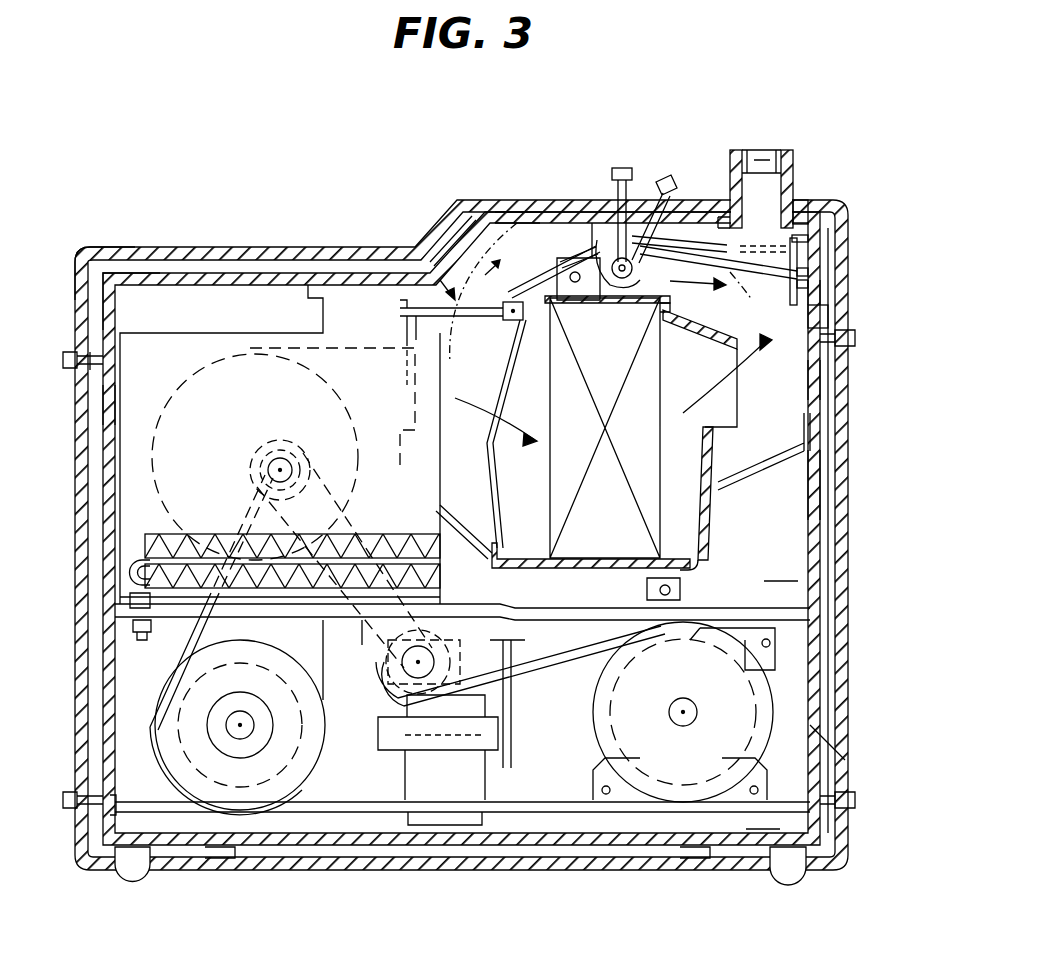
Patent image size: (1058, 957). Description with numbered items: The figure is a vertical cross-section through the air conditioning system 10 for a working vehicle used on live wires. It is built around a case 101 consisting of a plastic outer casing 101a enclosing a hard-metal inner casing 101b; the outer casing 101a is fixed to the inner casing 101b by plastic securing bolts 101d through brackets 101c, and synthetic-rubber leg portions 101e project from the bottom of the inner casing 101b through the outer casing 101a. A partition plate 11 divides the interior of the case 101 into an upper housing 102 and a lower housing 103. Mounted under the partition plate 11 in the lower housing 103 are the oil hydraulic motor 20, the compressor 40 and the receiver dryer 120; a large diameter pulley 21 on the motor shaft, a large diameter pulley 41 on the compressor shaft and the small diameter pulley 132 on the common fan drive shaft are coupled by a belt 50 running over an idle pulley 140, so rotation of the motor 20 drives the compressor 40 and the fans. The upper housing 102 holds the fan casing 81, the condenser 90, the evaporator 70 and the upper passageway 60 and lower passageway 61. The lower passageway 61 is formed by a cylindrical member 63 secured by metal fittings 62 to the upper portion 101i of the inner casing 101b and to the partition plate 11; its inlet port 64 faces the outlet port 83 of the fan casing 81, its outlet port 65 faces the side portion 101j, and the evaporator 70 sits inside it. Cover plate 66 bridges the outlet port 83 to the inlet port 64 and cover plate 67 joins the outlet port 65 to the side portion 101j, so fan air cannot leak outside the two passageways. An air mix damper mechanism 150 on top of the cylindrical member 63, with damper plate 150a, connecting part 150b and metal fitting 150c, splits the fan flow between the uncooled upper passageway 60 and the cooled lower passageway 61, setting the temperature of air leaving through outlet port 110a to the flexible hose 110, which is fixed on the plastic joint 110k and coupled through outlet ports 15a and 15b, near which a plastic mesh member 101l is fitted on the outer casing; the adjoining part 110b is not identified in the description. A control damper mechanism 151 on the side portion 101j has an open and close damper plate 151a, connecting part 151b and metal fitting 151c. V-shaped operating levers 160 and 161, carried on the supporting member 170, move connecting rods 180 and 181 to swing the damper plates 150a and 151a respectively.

The air conditioning system 10 is at (192, 244).
The partition plate 11 is at (714, 612).
The outlet port 15a is at (810, 272).
The outlet port 15b is at (810, 284).
The oil hydraulic motor 20 is at (292, 786).
The large diameter pulley 21 is at (302, 762).
The compressor 40 is at (730, 747).
The large diameter pulley 41 is at (800, 730).
The belt 50 is at (350, 814).
The upper passageway 60 is at (563, 360).
The lower passageway 61 is at (533, 558).
The metal fittings 62 is at (578, 256).
The cylindrical member 63 is at (720, 520).
The inlet port 64 is at (497, 492).
The outlet port 65 is at (738, 413).
The cover plate 66 is at (462, 530).
The cover plate 67 is at (832, 488).
The evaporator 70 is at (705, 554).
The fan casing 81 is at (266, 362).
The outlet port 83 is at (440, 412).
The condenser 90 is at (158, 350).
The case 101 is at (461, 528).
The outer casing 101a is at (80, 247).
The inner casing 101b is at (105, 250).
The brackets 101c is at (108, 405).
The securing bolts 101d is at (70, 352).
The leg portions 101e is at (126, 870).
The upper portion 101i is at (512, 212).
The side portion 101j is at (830, 365).
The mesh member 101l is at (830, 292).
The upper housing 102 is at (780, 570).
The lower housing 103 is at (762, 818).
The flexible hose 110 is at (776, 159).
The outlet port 110a is at (738, 215).
The duct right wall 110b is at (800, 200).
The joint 110k is at (762, 152).
The receiver dryer 120 is at (445, 800).
The small diameter pulley 132 is at (268, 462).
The idle pulley 140 is at (396, 666).
The air mix damper mechanism 150 is at (464, 252).
The damper plate 150a is at (400, 310).
The connecting part 150b is at (452, 290).
The metal fitting 150c is at (470, 252).
The control damper mechanism 151 is at (832, 242).
The open and close damper plate 151a is at (830, 320).
The connecting part 151b is at (810, 238).
The metal fitting 151c is at (802, 210).
The operating lever 160 is at (620, 166).
The operating lever 161 is at (665, 172).
The supporting member 170 is at (678, 274).
The connecting rod 180 is at (607, 318).
The connecting rod 181 is at (830, 428).